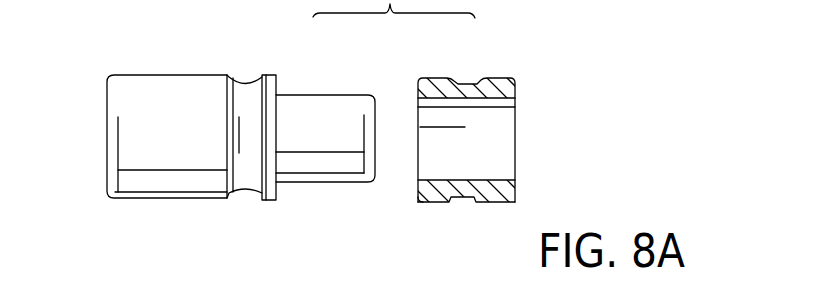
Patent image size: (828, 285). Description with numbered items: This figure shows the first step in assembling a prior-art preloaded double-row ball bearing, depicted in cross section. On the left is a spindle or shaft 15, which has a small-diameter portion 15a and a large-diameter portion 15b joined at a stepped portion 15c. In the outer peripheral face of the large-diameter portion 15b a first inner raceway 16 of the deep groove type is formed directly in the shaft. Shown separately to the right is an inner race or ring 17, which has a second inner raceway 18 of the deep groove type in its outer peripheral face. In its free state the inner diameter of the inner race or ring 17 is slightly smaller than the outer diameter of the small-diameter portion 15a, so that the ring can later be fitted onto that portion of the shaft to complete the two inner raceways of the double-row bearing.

The spindle or shaft 15 is at (240, 132).
The small-diameter portion 15a is at (337, 107).
The large-diameter portion 15b is at (152, 82).
The stepped portion 15c is at (280, 86).
The first inner raceway 16 is at (237, 193).
The inner race or ring 17 is at (514, 86).
The second inner raceway 18 is at (473, 200).